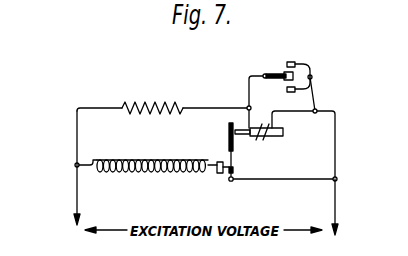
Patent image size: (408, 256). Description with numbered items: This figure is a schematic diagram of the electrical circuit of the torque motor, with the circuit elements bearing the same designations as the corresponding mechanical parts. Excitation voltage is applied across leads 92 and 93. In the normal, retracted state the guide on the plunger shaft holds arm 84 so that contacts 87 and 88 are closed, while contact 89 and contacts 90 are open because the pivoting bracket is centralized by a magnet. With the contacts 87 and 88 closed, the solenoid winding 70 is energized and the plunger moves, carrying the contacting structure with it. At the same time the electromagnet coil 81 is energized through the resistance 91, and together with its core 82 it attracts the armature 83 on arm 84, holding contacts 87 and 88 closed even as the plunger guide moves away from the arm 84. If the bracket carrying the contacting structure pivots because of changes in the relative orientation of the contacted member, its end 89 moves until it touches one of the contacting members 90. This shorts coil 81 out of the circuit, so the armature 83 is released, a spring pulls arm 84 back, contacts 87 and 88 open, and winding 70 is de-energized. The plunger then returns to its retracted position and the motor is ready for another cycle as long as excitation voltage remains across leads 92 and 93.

The solenoid winding 70 is at (156, 159).
The electromagnet coil 81 is at (266, 137).
The core 82 is at (283, 132).
The armature 83 is at (228, 125).
The arm 84 is at (234, 153).
The electrical contact 87 is at (218, 174).
The electrical contact 88 is at (231, 182).
The end of bracket 89 is at (284, 72).
The contacting members 90 is at (291, 62).
The resistance 91 is at (157, 99).
The lead 92 is at (78, 197).
The lead 93 is at (334, 203).